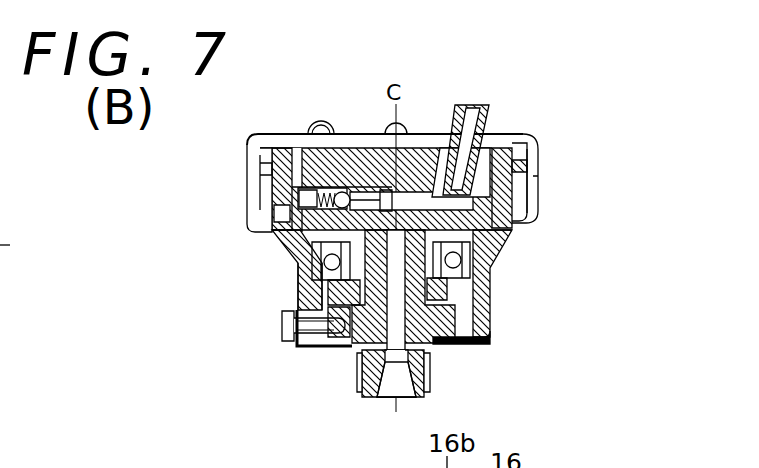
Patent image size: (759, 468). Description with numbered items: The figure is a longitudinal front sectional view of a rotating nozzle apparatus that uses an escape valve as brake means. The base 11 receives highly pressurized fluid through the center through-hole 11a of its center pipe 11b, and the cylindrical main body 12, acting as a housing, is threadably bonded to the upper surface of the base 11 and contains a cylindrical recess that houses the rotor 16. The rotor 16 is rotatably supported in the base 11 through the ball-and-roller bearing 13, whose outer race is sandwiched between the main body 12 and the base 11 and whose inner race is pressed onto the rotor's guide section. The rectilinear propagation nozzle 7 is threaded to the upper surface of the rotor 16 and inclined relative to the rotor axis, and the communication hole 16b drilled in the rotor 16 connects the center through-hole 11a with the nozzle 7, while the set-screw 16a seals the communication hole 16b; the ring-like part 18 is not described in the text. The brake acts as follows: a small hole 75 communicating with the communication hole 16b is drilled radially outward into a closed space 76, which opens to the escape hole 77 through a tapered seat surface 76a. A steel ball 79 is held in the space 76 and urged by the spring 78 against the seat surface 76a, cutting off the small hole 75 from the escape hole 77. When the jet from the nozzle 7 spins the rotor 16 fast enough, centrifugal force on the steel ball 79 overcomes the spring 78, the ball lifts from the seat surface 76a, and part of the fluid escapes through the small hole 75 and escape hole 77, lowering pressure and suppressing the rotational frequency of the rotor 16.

The rectilinear propagation nozzle 7 is at (487, 107).
The base 11 is at (431, 370).
The center through-hole 11a is at (383, 396).
The center pipe 11b is at (345, 350).
The cylindrical main body 12 is at (510, 233).
The ball-and-roller bearing 13 is at (485, 272).
The rotor 16 is at (367, 134).
The set-screw 16a is at (529, 197).
The communication hole 16b is at (424, 165).
The ring 18 is at (527, 157).
The small hole 75 is at (347, 134).
The closed space 76 is at (265, 178).
The tapered seat surface 76a is at (296, 291).
The escape hole 77 is at (293, 134).
The spring 78 is at (274, 234).
The steel ball 79 is at (297, 265).